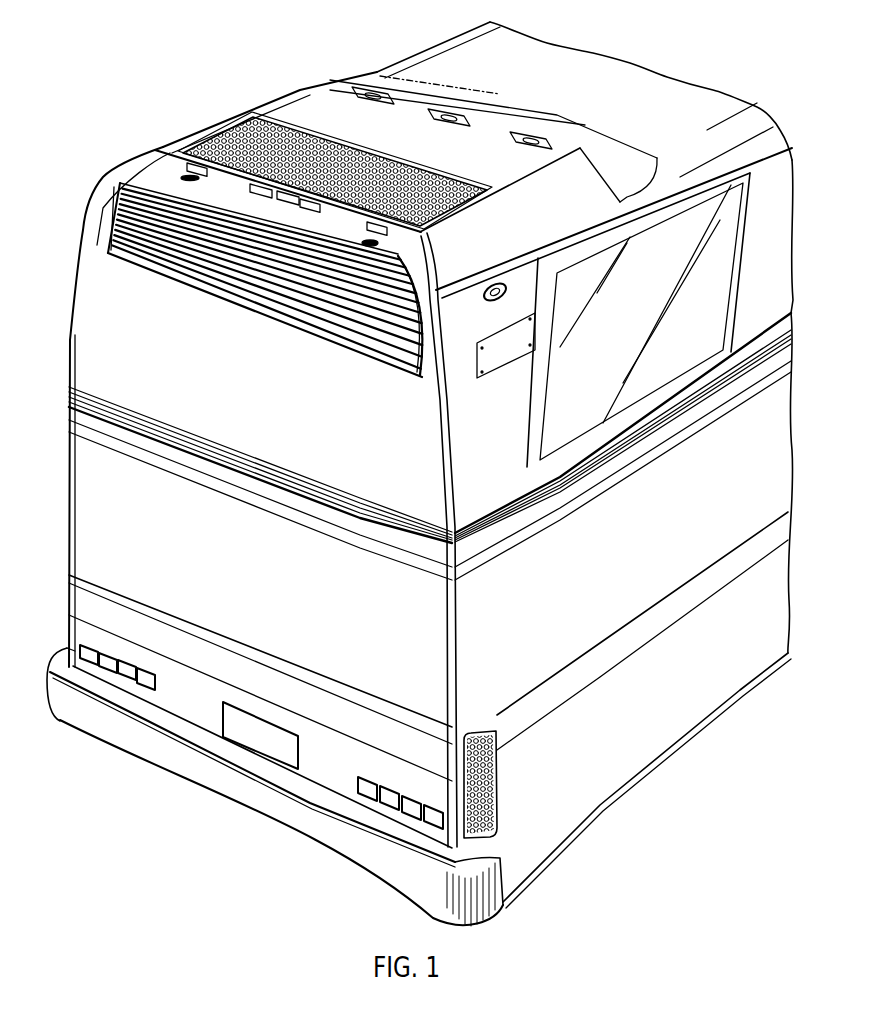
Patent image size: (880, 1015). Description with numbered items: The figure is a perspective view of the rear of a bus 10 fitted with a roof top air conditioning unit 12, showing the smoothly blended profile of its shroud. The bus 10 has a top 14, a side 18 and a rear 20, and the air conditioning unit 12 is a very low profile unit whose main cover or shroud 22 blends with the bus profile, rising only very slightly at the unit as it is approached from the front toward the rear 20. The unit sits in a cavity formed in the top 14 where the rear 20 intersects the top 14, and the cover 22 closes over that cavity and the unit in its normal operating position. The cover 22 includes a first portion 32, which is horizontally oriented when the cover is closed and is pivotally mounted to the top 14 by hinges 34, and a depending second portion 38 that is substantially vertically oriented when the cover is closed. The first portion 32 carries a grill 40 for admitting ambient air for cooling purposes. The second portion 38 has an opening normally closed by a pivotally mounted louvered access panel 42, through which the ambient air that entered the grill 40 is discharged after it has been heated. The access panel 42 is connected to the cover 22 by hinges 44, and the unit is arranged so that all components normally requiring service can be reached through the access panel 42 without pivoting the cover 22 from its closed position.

The bus 10 is at (403, 30).
The roof top air conditioning unit 12 is at (302, 112).
The top 14 is at (587, 67).
The side 18 is at (680, 478).
The rear 20 is at (127, 320).
The main cover or shroud 22 is at (507, 248).
The first portion 32 is at (500, 172).
The hinges 34 is at (540, 132).
The depending second portion 38 is at (440, 358).
The grill 40 is at (402, 162).
The louvered access panel 42 is at (400, 295).
The hinges 44 is at (281, 207).